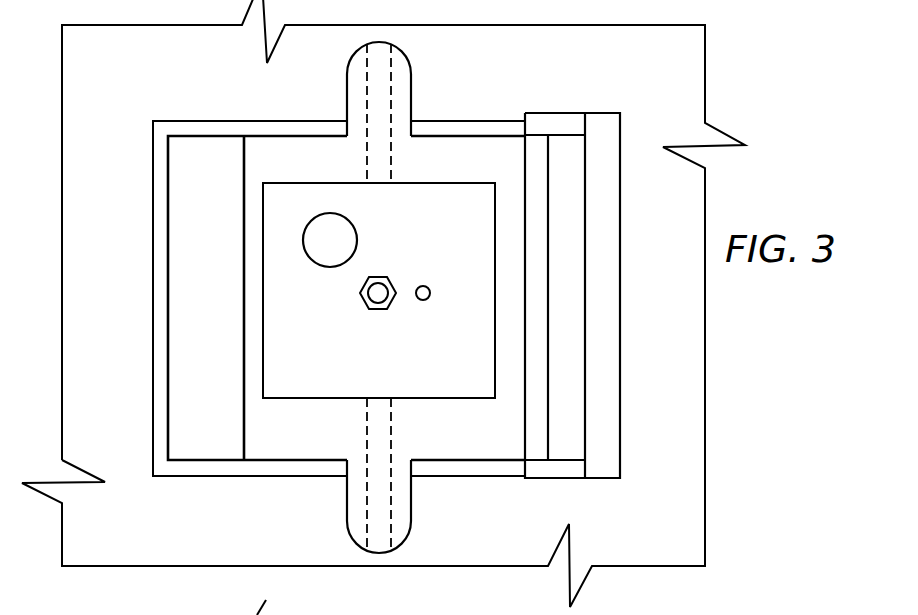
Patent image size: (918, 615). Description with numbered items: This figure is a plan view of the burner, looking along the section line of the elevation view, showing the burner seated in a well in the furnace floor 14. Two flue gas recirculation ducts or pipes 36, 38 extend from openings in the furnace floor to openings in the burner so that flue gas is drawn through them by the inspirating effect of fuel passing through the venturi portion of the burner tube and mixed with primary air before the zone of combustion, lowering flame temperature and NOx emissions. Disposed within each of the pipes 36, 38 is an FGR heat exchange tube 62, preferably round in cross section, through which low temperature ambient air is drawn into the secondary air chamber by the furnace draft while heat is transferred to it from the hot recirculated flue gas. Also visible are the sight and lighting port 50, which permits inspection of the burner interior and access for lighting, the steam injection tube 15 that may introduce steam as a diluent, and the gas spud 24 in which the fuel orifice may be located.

The furnace floor 14 is at (657, 527).
The duct or pipe 36 is at (402, 50).
The duct or pipe 38 is at (408, 540).
The FGR heat exchange tube 62 is at (367, 95).
The sight and lighting port 50 is at (347, 217).
The steam injection tube 15 is at (423, 285).
The gas spud 24 is at (377, 311).